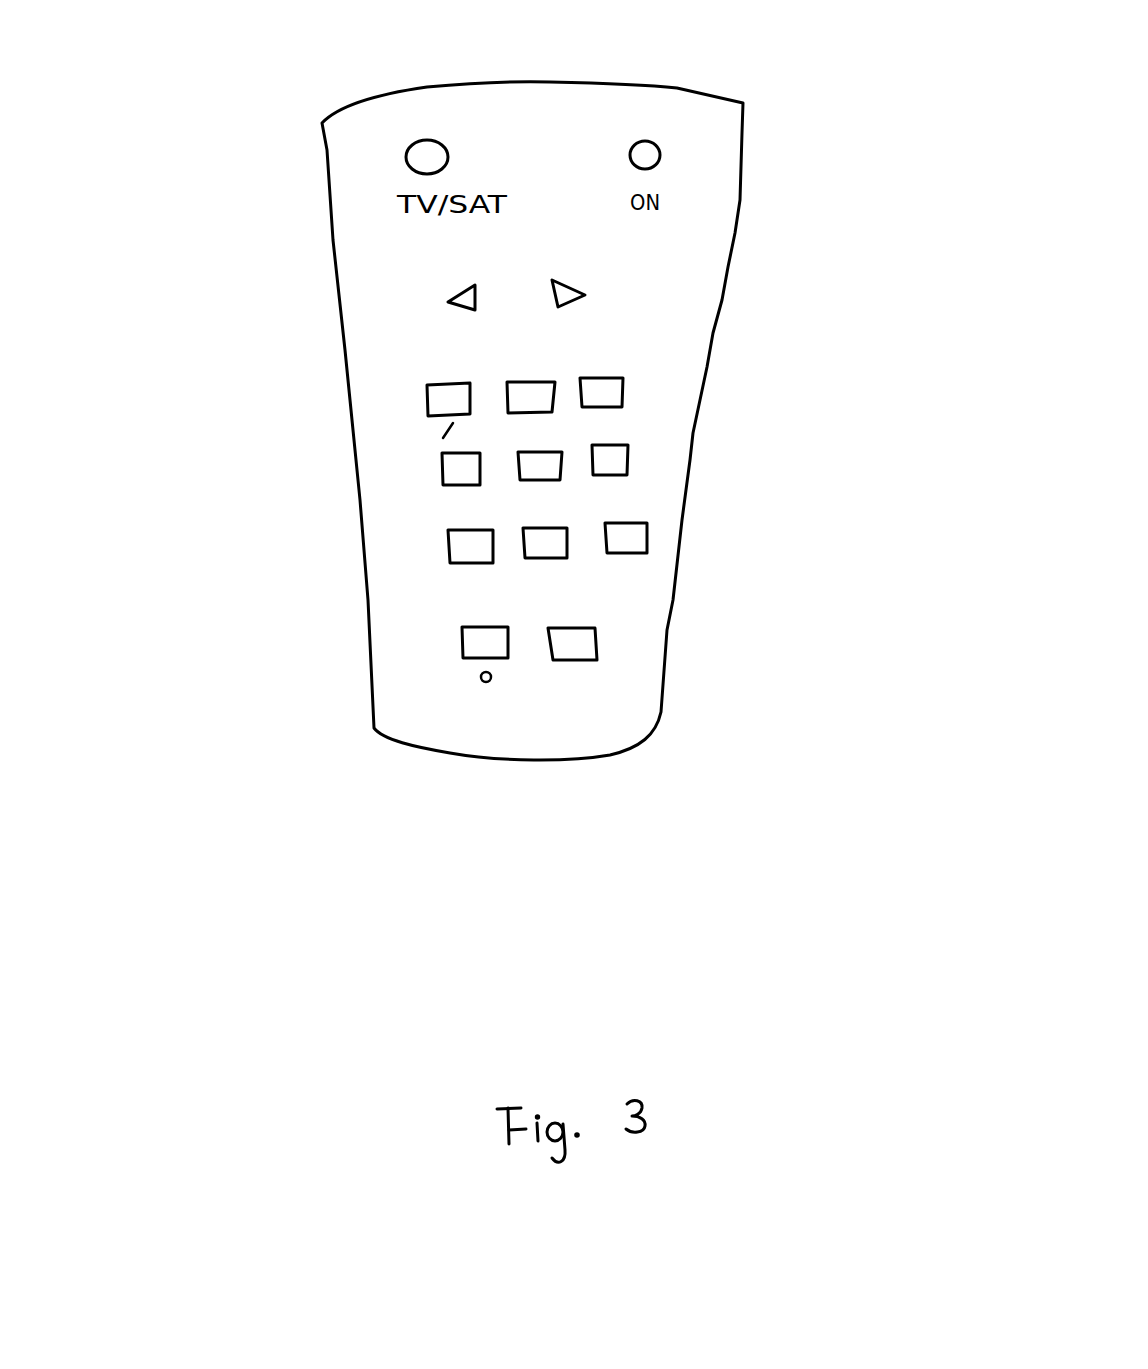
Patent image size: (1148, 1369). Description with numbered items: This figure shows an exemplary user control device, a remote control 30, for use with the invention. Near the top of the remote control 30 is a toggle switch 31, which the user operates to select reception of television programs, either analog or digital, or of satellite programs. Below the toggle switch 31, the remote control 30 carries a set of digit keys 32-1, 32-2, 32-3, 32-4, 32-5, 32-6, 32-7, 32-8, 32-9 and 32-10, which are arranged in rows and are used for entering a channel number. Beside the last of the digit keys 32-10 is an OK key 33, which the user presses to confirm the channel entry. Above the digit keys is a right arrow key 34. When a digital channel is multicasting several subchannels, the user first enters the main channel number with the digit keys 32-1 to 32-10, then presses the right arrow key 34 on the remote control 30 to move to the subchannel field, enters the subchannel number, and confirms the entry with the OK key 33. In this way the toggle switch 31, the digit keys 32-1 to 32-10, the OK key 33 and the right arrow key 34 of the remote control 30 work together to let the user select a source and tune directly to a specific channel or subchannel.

The remote control 30 is at (677, 82).
The toggle switch 31 is at (406, 157).
The digit key 32-1 is at (423, 394).
The digit key 32-2 is at (537, 383).
The digit key 32-3 is at (630, 397).
The digit key 32-4 is at (443, 472).
The digit key 32-5 is at (582, 438).
The digit key 32-6 is at (637, 472).
The digit key 32-7 is at (450, 565).
The digit key 32-8 is at (560, 558).
The digit key 32-9 is at (647, 550).
The digit key 32-10 is at (462, 658).
The OK key 33 is at (465, 658).
The right arrow key 34 is at (585, 295).